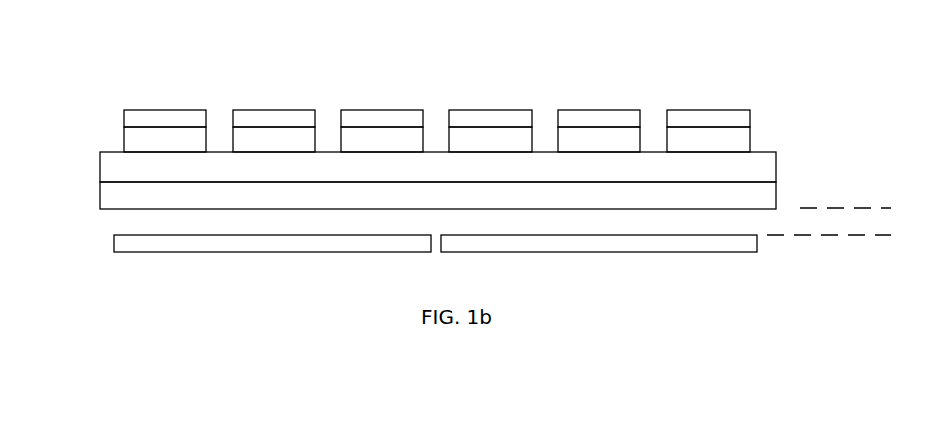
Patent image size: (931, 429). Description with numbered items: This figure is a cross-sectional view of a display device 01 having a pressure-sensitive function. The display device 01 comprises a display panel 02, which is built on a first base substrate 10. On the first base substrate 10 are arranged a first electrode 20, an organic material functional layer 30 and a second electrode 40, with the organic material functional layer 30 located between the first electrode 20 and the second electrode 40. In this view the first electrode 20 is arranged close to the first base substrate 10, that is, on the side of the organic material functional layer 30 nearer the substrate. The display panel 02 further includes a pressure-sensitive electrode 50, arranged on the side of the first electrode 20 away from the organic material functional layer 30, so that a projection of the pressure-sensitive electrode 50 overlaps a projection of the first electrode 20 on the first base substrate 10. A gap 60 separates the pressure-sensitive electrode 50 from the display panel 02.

The display device 01 is at (155, 77).
The display panel 02 is at (93, 101).
The first base substrate 10 is at (737, 196).
The first electrode 20 is at (737, 169).
The organic material functional layer 30 is at (740, 143).
The second electrode 40 is at (737, 115).
The pressure-sensitive electrode 50 is at (742, 244).
The gap 60 is at (868, 188).